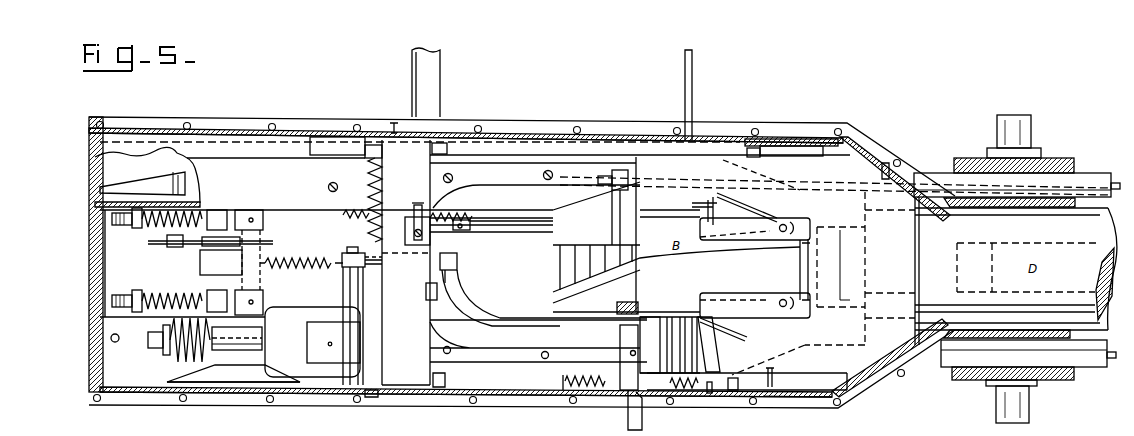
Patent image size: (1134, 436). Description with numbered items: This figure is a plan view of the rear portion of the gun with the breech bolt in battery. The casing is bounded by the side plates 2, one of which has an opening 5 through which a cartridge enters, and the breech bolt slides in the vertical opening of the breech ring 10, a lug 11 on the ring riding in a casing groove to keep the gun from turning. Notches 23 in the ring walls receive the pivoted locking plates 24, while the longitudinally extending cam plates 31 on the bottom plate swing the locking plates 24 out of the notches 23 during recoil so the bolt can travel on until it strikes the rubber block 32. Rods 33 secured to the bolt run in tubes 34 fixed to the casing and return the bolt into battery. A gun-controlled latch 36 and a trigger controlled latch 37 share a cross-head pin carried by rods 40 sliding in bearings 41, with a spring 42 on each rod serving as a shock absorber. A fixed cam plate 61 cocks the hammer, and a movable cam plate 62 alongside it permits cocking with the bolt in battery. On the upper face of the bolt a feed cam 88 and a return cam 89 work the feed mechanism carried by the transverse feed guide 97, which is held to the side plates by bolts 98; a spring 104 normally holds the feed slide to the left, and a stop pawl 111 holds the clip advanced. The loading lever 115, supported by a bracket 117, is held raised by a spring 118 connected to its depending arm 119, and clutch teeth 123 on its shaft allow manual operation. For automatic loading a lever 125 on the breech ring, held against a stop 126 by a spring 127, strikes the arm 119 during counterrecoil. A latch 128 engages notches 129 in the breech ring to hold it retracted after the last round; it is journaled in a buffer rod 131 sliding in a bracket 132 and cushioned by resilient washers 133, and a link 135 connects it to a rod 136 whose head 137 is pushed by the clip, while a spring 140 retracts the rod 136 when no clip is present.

The side plates 2 is at (300, 128).
The opening 5 is at (596, 140).
The breech ring 10 is at (823, 283).
The lug 11 is at (786, 152).
The notches 23 is at (748, 209).
The locking plates 24 is at (740, 343).
The cam plates 31 is at (371, 272).
The rubber block 32 is at (89, 270).
The rods 33 is at (1115, 183).
The tubes 34 is at (926, 177).
The gun-controlled latch 36 is at (203, 265).
The trigger controlled latch 37 is at (198, 247).
The rods 40 is at (120, 295).
The bearings 41 is at (215, 212).
The spring 42 is at (155, 298).
The fixed cam plate 61 is at (487, 232).
The movable cam plate 62 is at (540, 228).
The feed cam 88 is at (737, 253).
The return cam 89 is at (588, 258).
The feed guide 97 is at (407, 262).
The bolts 98 is at (377, 400).
The spring 104 is at (368, 183).
The stop pawl 111 is at (413, 212).
The loading lever 115 is at (467, 313).
The bracket 117 is at (645, 303).
The spring 118 is at (602, 386).
The depending arm 119 is at (655, 388).
The clutch teeth 123 is at (625, 410).
The lever 125 is at (733, 390).
The stop 126 is at (708, 394).
The spring 127 is at (692, 388).
The latch 128 is at (312, 342).
The notches 129 is at (681, 323).
The buffer rod 131 is at (148, 343).
The bracket 132 is at (222, 353).
The resilient washers 133 is at (172, 358).
The link 135 is at (345, 253).
The rod 136 is at (378, 268).
The head 137 is at (458, 262).
The spring 140 is at (300, 272).